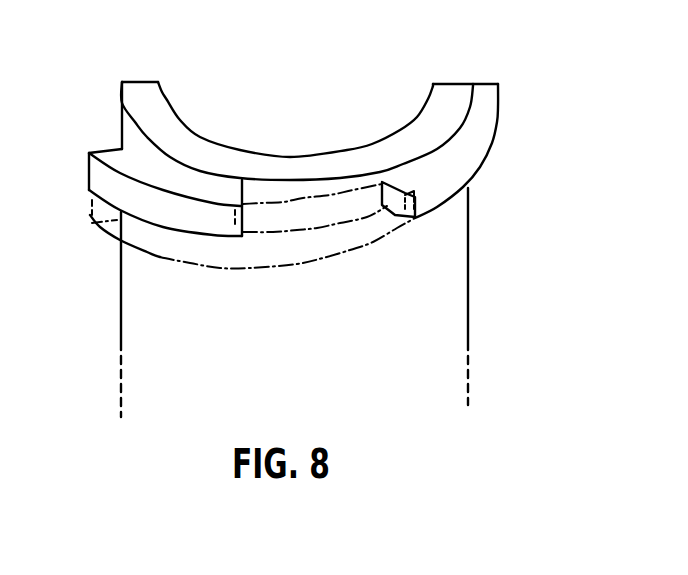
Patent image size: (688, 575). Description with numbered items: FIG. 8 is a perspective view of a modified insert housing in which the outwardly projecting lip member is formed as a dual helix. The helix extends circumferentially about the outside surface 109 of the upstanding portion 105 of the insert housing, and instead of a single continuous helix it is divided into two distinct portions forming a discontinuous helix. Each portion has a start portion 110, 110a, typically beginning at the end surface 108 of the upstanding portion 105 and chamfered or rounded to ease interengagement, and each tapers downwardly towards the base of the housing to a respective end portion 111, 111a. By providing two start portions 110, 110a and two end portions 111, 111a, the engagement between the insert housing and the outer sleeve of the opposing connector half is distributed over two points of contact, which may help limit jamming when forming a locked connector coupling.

The upstanding portion 105 is at (445, 230).
The end surface 108 is at (443, 100).
The outside surface 109 is at (147, 292).
The start portion 110 is at (487, 84).
The start portion 110a is at (244, 210).
The end portion 111 is at (391, 208).
The end portion 111a is at (97, 150).